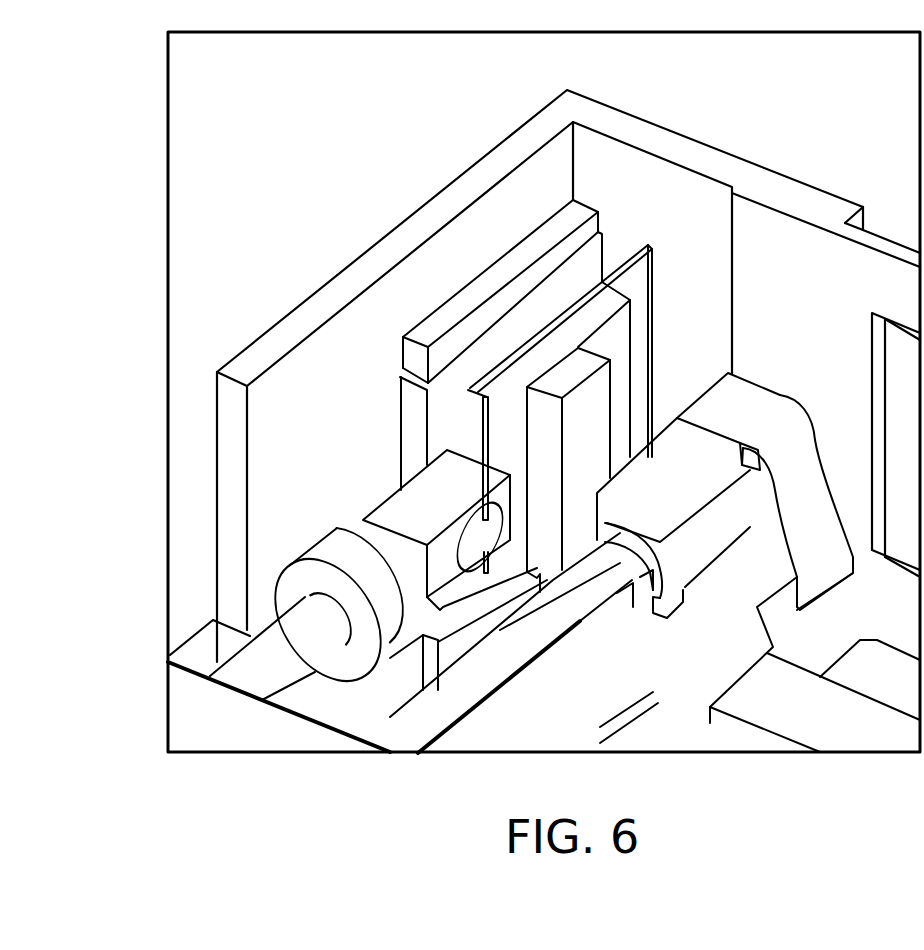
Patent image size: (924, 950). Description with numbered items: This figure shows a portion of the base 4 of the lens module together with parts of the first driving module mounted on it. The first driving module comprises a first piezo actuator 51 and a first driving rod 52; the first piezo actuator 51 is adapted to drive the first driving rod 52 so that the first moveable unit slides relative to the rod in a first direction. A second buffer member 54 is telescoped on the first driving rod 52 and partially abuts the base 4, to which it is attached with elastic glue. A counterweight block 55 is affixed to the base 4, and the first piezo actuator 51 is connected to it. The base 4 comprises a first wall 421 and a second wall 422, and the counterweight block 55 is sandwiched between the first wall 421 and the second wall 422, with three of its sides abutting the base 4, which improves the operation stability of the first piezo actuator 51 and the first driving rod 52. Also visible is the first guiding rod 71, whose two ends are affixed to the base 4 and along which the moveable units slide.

The base 4 is at (483, 627).
The first piezo actuator 51 is at (395, 512).
The first driving rod 52 is at (255, 663).
The second buffer member 54 is at (343, 545).
The counterweight block 55 is at (517, 323).
The first guiding rod 71 is at (582, 587).
The first wall 421 is at (565, 370).
The second wall 422 is at (447, 313).